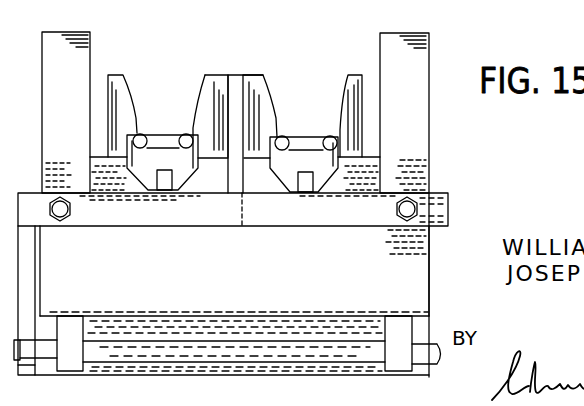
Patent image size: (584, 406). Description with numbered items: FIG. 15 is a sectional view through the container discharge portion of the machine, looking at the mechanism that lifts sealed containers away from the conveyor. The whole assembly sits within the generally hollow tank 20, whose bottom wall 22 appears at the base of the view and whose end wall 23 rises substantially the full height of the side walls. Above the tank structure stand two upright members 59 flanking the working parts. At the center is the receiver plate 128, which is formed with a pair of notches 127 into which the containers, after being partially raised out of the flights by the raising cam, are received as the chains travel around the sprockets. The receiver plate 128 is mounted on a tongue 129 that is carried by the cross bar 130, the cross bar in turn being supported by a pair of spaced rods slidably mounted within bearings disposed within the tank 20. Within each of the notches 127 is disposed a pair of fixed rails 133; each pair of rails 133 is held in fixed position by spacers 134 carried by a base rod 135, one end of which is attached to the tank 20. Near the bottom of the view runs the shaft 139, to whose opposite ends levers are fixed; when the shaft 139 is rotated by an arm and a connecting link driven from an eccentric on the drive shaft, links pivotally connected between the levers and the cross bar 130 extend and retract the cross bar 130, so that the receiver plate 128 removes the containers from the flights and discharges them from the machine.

The tank 20 is at (438, 164).
The bottom wall 22 is at (206, 366).
The end wall 23 is at (400, 256).
The upright post 59 is at (63, 32).
The notches 127 is at (129, 99).
The receiver plate 128 is at (213, 75).
The tongue 129 is at (246, 77).
The cross bar 130 is at (160, 218).
The fixed rails 133 is at (182, 137).
The spacers 134 is at (136, 168).
The base rod 135 is at (176, 183).
The shaft 139 is at (299, 356).